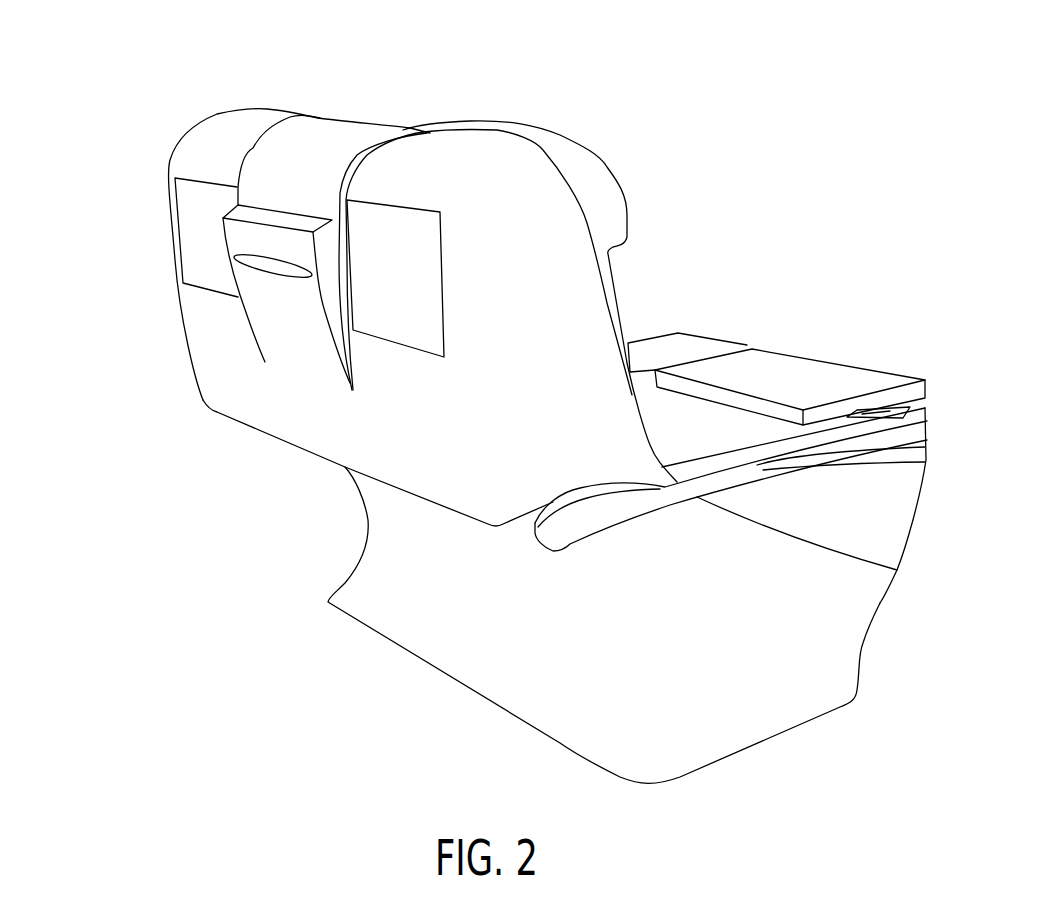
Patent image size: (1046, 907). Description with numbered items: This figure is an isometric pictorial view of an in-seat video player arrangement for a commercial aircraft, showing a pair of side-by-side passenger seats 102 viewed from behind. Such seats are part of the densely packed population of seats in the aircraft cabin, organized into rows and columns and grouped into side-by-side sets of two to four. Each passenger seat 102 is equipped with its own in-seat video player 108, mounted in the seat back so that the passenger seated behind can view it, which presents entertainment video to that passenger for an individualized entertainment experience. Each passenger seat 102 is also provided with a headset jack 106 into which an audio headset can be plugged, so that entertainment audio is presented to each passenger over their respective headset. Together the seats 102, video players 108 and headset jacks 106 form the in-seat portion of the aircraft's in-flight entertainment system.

The passenger seats 102 is at (555, 90).
The in-seat video player 108 is at (177, 231).
The headset jack 106 is at (866, 407).